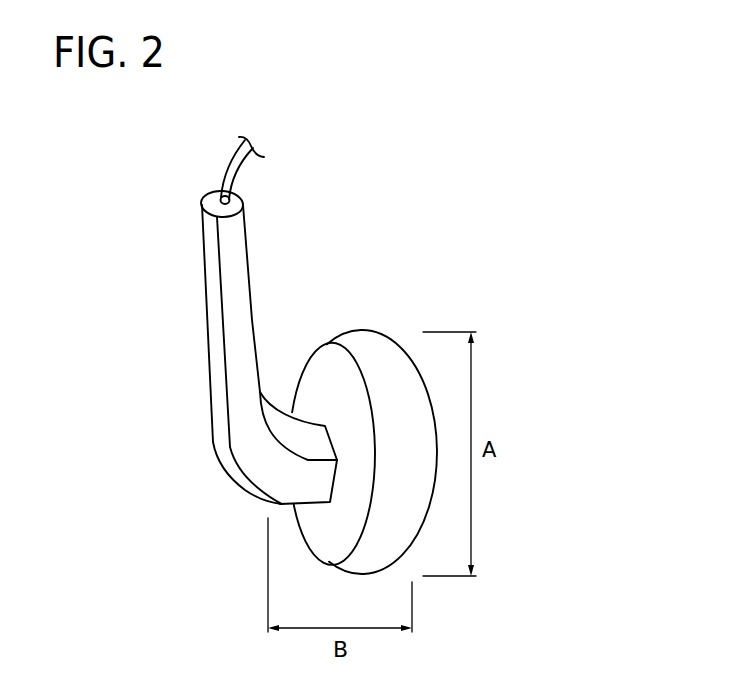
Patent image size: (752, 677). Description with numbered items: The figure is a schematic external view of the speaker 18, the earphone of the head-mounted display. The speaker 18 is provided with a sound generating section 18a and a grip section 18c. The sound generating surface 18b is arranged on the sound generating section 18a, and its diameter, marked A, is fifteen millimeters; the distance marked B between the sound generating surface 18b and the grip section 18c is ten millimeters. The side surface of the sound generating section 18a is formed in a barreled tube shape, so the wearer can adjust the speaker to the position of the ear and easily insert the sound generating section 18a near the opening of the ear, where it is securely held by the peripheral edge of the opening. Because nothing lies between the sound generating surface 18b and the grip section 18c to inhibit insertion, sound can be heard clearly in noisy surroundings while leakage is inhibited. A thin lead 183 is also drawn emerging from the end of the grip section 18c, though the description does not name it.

The speaker 18 is at (369, 246).
The sound generating section 18a is at (369, 343).
The sound generating surface 18b is at (431, 392).
The grip section 18c is at (233, 285).
The cable 183 is at (229, 174).